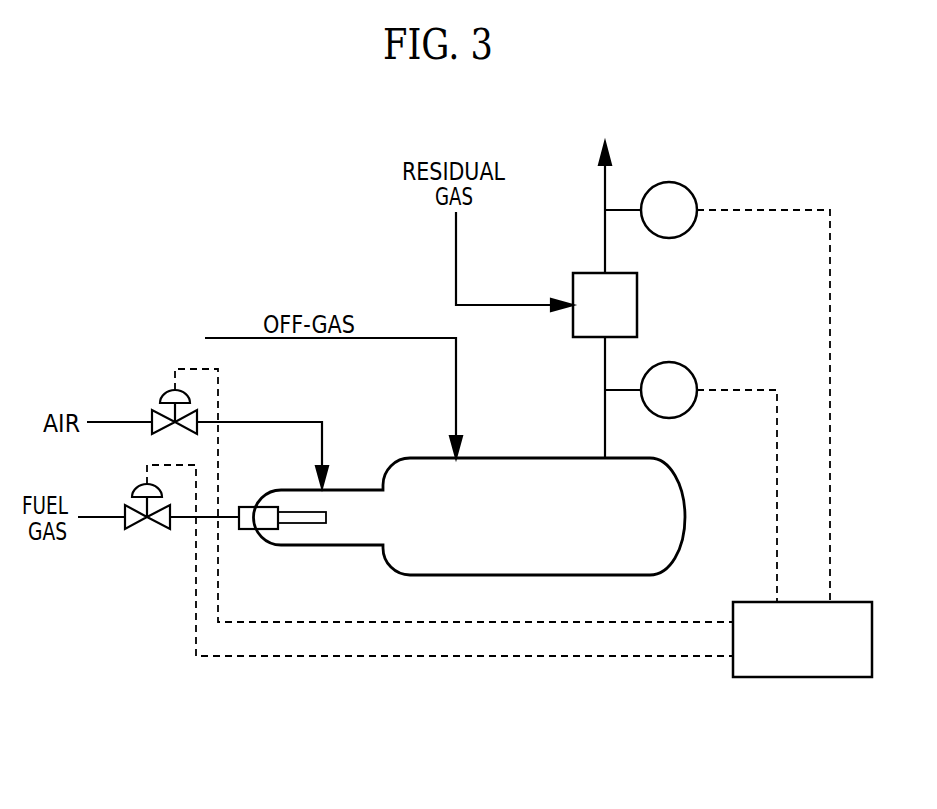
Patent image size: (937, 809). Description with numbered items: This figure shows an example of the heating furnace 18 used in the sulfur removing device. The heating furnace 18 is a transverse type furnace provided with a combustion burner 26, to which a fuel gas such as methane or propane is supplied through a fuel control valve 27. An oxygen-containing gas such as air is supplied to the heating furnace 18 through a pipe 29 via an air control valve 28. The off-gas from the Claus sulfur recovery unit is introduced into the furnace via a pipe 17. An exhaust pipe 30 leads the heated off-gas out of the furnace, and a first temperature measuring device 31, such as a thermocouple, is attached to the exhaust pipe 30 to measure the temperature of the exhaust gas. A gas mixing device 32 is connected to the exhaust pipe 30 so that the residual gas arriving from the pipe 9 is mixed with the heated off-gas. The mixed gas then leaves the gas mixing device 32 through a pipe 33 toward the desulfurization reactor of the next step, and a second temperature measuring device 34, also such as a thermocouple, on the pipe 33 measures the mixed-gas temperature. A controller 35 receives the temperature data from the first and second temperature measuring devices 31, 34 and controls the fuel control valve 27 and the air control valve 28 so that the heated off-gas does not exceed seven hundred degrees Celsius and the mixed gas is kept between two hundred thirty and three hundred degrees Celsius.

The pipe 9 is at (456, 242).
The pipe 17 is at (456, 375).
The heating furnace 18 is at (660, 510).
The combustion burner 26 is at (264, 531).
The fuel control valve 27 is at (157, 522).
The air control valve 28 is at (157, 408).
The pipe 29 is at (279, 422).
The exhaust pipe 30 is at (603, 424).
The first temperature measuring device 31 is at (672, 378).
The gas mixing device 32 is at (622, 303).
The pipe 33 is at (603, 232).
The second temperature measuring device 34 is at (665, 193).
The controller 35 is at (806, 657).